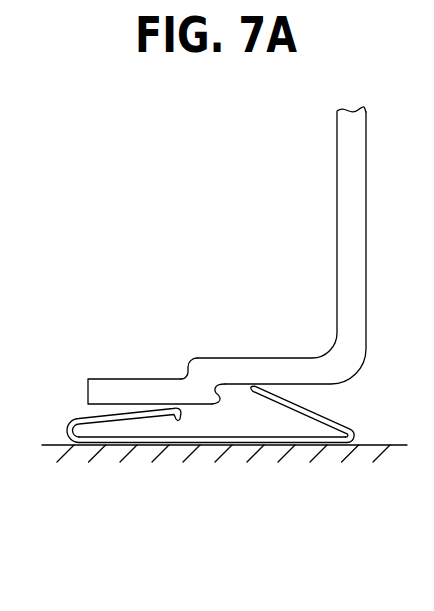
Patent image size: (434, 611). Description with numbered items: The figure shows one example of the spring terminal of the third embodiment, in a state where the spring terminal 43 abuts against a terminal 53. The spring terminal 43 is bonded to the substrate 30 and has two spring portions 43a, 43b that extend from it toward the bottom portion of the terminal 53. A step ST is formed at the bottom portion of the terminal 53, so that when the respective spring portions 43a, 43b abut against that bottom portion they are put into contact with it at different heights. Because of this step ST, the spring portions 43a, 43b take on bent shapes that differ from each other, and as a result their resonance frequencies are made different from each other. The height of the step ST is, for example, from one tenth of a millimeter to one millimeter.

The terminal 53 is at (258, 255).
The step ST is at (227, 391).
The spring terminal 43 is at (228, 450).
The spring portion 43a is at (326, 415).
The spring portion 43b is at (82, 415).
The substrate 30 is at (345, 462).